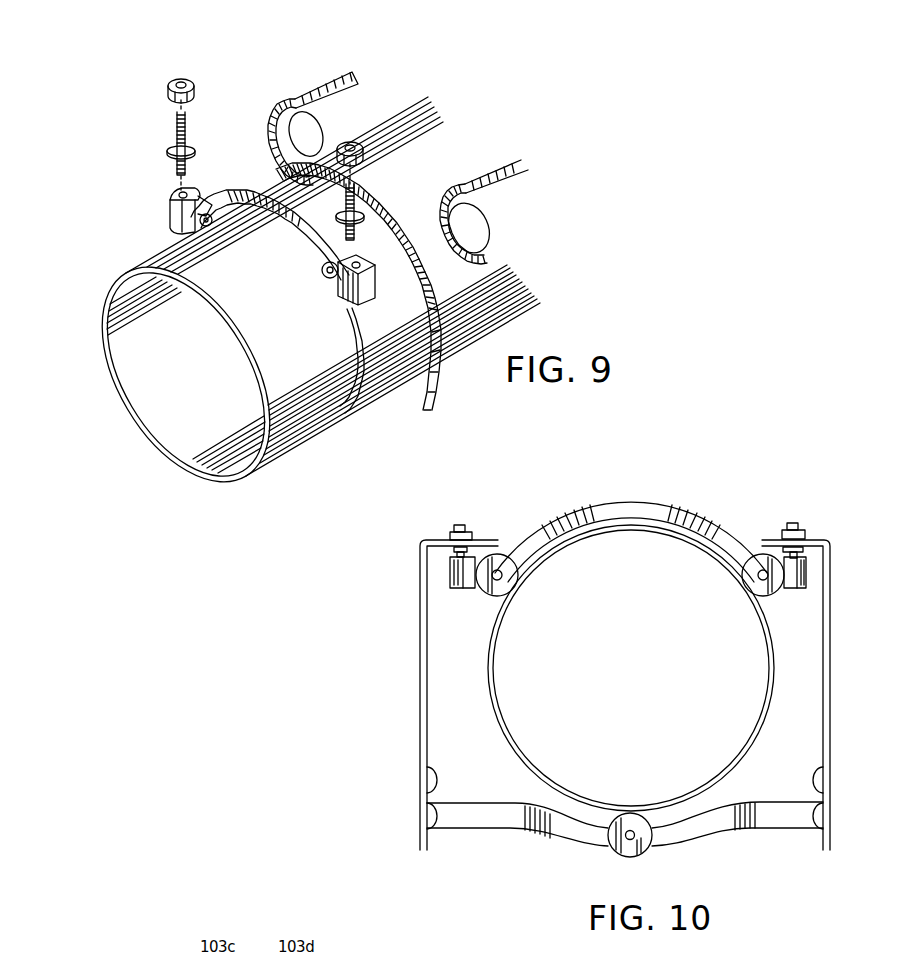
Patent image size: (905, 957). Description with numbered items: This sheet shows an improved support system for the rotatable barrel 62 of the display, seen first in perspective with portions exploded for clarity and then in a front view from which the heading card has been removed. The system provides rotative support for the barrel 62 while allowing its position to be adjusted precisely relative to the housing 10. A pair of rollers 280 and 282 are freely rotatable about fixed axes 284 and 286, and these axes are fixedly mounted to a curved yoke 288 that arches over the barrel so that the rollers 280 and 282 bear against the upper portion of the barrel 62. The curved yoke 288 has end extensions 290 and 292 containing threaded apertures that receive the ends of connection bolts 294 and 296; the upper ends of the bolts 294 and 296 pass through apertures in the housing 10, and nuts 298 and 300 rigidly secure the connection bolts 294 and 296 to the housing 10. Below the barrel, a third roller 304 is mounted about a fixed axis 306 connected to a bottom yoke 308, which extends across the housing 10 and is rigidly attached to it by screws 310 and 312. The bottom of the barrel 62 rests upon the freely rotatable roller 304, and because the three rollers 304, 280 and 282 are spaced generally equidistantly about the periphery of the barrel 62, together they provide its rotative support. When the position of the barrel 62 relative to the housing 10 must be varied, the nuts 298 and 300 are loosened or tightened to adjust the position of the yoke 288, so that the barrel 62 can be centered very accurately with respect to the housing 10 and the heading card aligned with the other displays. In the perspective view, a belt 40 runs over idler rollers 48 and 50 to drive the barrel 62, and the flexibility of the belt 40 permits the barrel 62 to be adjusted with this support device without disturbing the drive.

In FIG. 10, the housing 10 is at (420, 673).
In FIG. 9, the belt 40 is at (330, 83).
In FIG. 9, the idler roller 48 is at (280, 110).
In FIG. 9, the idler roller 50 is at (489, 224).
In FIG. 9, the barrel 62 is at (100, 334).
In FIG. 10, the barrel 62 is at (489, 653).
In FIG. 9, the roller 280 is at (207, 212).
In FIG. 10, the roller 280 is at (510, 553).
In FIG. 9, the roller 282 is at (322, 270).
In FIG. 10, the roller 282 is at (763, 554).
In FIG. 10, the fixed axis 284 is at (497, 570).
In FIG. 10, the fixed axis 286 is at (757, 570).
In FIG. 9, the curved yoke 288 is at (250, 192).
In FIG. 10, the curved yoke 288 is at (613, 500).
In FIG. 9, the end extension 290 is at (169, 213).
In FIG. 10, the end extension 290 is at (450, 583).
In FIG. 9, the end extension 292 is at (338, 302).
In FIG. 10, the end extension 292 is at (806, 583).
In FIG. 9, the connection bolt 294 is at (175, 136).
In FIG. 10, the connection bolt 294 is at (454, 553).
In FIG. 9, the connection bolt 296 is at (350, 238).
In FIG. 10, the connection bolt 296 is at (803, 553).
In FIG. 9, the nut 298 is at (167, 90).
In FIG. 10, the nut 298 is at (450, 533).
In FIG. 9, the nut 300 is at (350, 142).
In FIG. 10, the nut 300 is at (806, 533).
In FIG. 10, the third roller 304 is at (648, 848).
In FIG. 10, the fixed axis 306 is at (613, 847).
In FIG. 10, the bottom yoke 308 is at (479, 828).
In FIG. 10, the screw 310 is at (438, 812).
In FIG. 10, the screw 312 is at (810, 813).